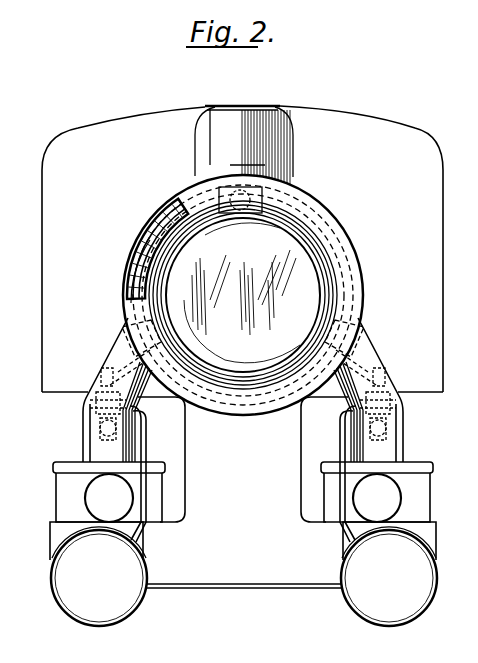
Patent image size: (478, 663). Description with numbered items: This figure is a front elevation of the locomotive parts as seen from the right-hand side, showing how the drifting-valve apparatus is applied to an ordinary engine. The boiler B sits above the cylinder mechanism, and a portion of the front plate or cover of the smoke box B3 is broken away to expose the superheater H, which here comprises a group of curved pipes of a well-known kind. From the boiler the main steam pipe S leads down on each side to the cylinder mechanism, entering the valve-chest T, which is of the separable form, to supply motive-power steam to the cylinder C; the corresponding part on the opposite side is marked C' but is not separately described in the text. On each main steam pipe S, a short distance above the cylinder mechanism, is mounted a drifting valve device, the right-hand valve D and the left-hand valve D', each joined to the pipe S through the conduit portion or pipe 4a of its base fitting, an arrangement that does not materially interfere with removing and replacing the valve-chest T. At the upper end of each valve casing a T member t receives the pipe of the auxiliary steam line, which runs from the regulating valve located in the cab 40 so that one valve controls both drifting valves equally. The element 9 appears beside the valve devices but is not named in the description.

The cab 40 is at (369, 108).
The boiler B is at (327, 213).
The superheater H is at (152, 238).
The front plate of the smoke box B3 is at (135, 283).
The main steam pipe S is at (111, 352).
The T member t is at (102, 384).
The drifting valve device D is at (83, 407).
The left-hand drifting valve D' is at (408, 404).
The conduit portion or pipe 4a is at (96, 432).
The pipe 9 is at (146, 449).
The valve-chest T is at (60, 494).
The cylinder C is at (84, 574).
The wheel C' is at (400, 574).